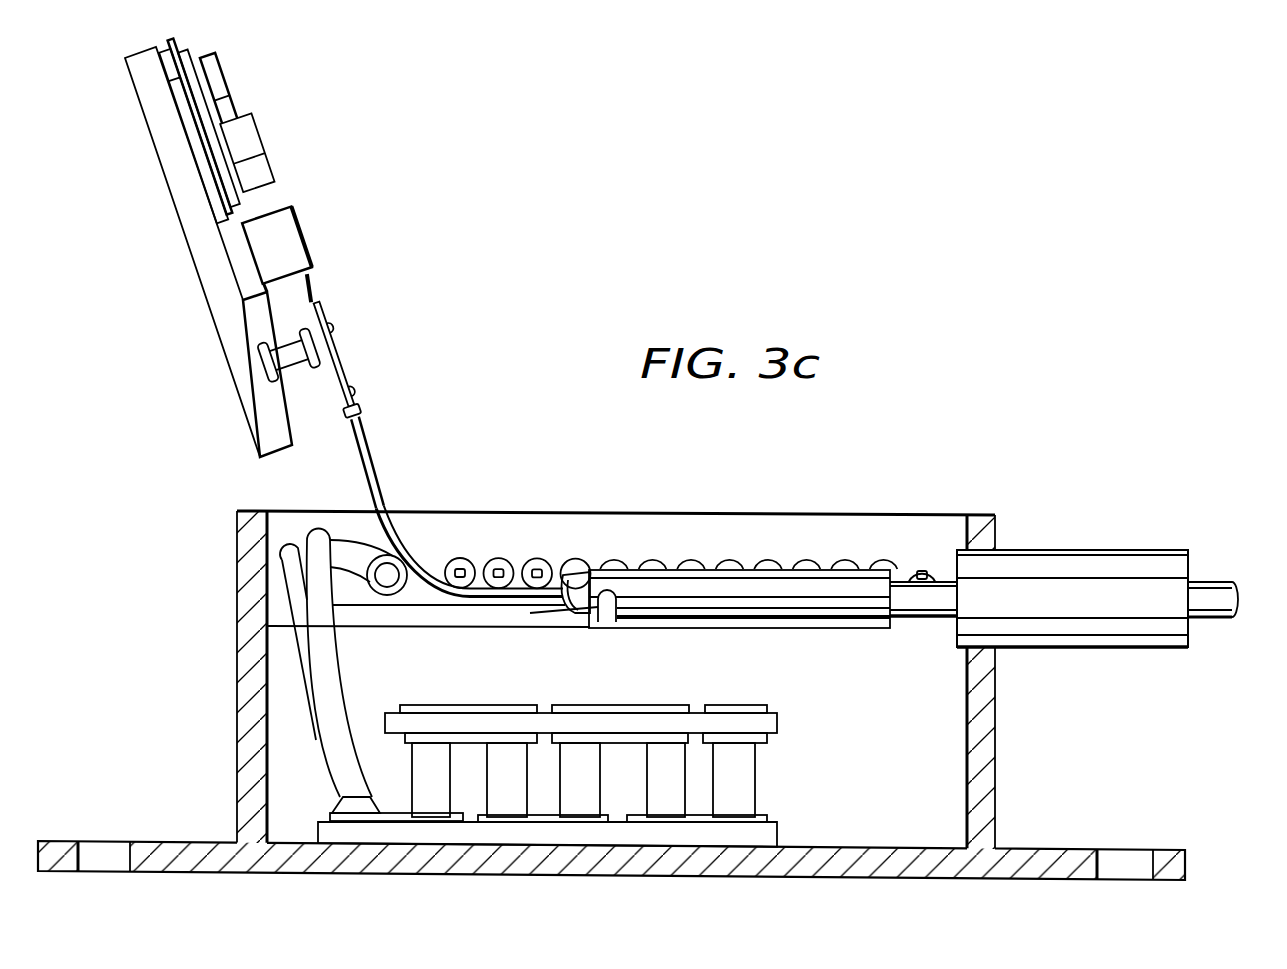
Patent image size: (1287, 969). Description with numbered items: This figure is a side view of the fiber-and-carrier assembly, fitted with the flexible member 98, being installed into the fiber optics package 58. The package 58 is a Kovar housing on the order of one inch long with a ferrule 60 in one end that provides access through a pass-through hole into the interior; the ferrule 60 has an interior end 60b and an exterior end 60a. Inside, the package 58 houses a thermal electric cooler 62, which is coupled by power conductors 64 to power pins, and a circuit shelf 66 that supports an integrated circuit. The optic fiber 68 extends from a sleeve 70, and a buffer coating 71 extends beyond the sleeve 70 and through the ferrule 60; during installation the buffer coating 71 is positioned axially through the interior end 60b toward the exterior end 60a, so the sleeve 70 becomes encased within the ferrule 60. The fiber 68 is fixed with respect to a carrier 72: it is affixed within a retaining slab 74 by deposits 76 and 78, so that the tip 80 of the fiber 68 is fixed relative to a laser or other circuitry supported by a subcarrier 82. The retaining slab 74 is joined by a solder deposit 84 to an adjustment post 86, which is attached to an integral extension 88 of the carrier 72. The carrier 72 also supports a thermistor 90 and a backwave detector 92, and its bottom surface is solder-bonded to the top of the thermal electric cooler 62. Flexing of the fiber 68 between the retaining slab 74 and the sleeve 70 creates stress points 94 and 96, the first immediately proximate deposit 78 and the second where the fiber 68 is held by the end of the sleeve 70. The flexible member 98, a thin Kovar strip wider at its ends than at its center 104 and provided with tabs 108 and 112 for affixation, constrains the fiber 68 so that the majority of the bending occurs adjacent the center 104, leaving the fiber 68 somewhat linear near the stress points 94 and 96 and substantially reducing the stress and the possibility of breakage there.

The fiber optics package 58 is at (998, 760).
The ferrule 60 is at (1077, 550).
The exterior end of ferrule 60a is at (1213, 559).
The interior end of ferrule 60b is at (936, 554).
The thermal electric cooler 62 is at (778, 727).
The power conductors 64 is at (345, 670).
The circuit shelf 66 is at (483, 630).
The optic fiber 68 is at (430, 560).
The sleeve 70 is at (675, 565).
The buffer coating 71 is at (923, 617).
The carrier 72 is at (188, 248).
The retaining slab 74 is at (322, 310).
The deposit 76 is at (332, 327).
The deposit 78 is at (348, 390).
The tip of optic fiber 80 is at (326, 267).
The subcarrier 82 is at (290, 259).
The solder deposit 84 is at (327, 373).
The adjustment post 86 is at (297, 345).
The integral extension of carrier 88 is at (250, 413).
The thermistor 90 is at (217, 80).
The backwave detector 92 is at (267, 143).
The stress point 94 is at (402, 446).
The stress point 96 is at (552, 532).
The flexible member 98 is at (363, 470).
The center of flexible member 104 is at (445, 615).
The tab 108 is at (360, 410).
The tab 112 is at (612, 630).